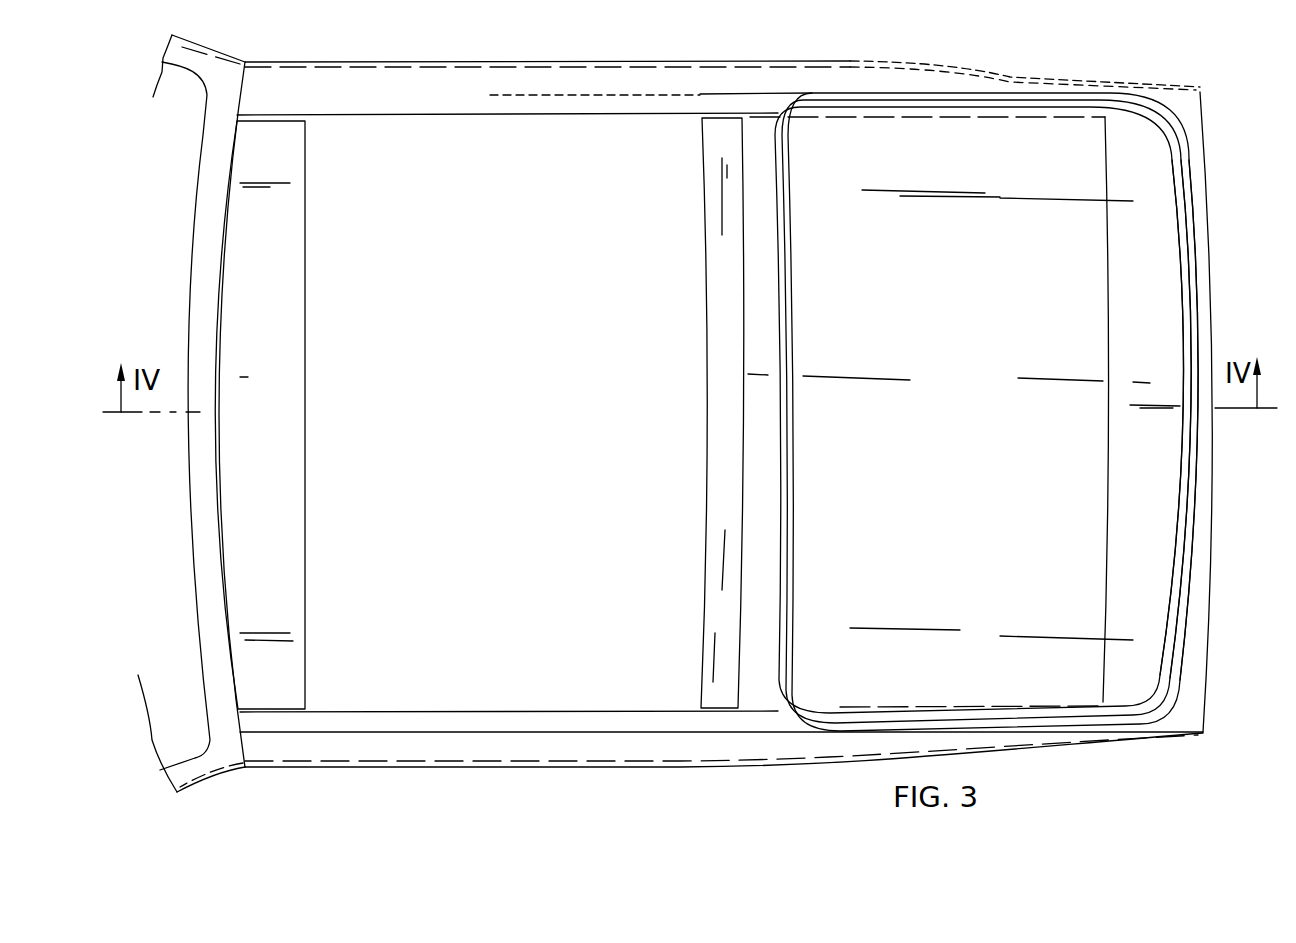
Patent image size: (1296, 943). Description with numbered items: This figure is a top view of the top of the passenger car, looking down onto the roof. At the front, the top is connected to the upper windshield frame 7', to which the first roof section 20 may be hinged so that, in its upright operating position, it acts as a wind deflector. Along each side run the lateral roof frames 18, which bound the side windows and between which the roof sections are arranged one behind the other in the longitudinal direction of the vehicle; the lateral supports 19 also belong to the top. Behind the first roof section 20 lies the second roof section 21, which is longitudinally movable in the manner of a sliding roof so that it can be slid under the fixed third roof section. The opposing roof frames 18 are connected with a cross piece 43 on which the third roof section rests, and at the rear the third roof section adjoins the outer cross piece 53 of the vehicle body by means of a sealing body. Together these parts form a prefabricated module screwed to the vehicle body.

The upper windshield frame 7' is at (200, 426).
The lateral roof frame 18 is at (530, 743).
The lateral support 19 is at (695, 87).
The first roof section 20 is at (288, 602).
The second roof section 21 is at (727, 532).
The cross piece 43 is at (763, 583).
The outer cross piece 53 is at (1188, 675).